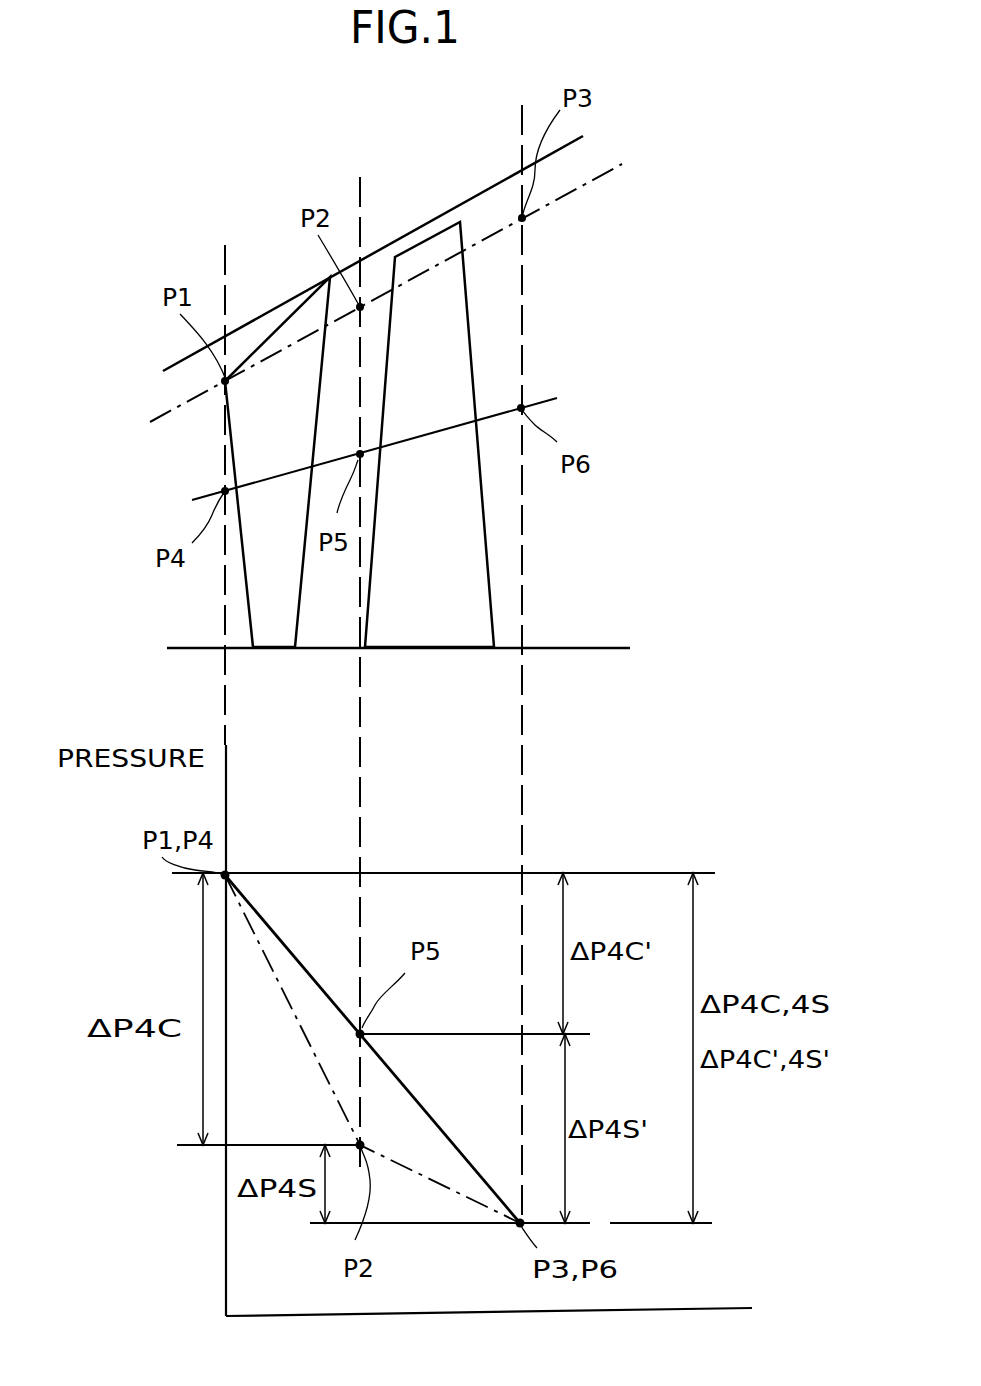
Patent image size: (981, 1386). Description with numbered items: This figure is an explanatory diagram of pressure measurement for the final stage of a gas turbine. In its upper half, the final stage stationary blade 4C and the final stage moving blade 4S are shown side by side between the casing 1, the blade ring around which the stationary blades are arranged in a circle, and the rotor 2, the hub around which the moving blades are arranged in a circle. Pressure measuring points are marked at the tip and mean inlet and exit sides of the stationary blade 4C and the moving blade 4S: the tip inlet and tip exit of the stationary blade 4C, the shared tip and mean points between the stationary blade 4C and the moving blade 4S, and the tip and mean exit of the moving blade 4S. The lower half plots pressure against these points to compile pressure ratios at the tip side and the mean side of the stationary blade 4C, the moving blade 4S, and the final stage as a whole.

The casing 1 is at (272, 250).
The rotor 2 is at (287, 650).
The final stage stationary blade 4C is at (257, 435).
The final stage moving blade 4S is at (448, 382).